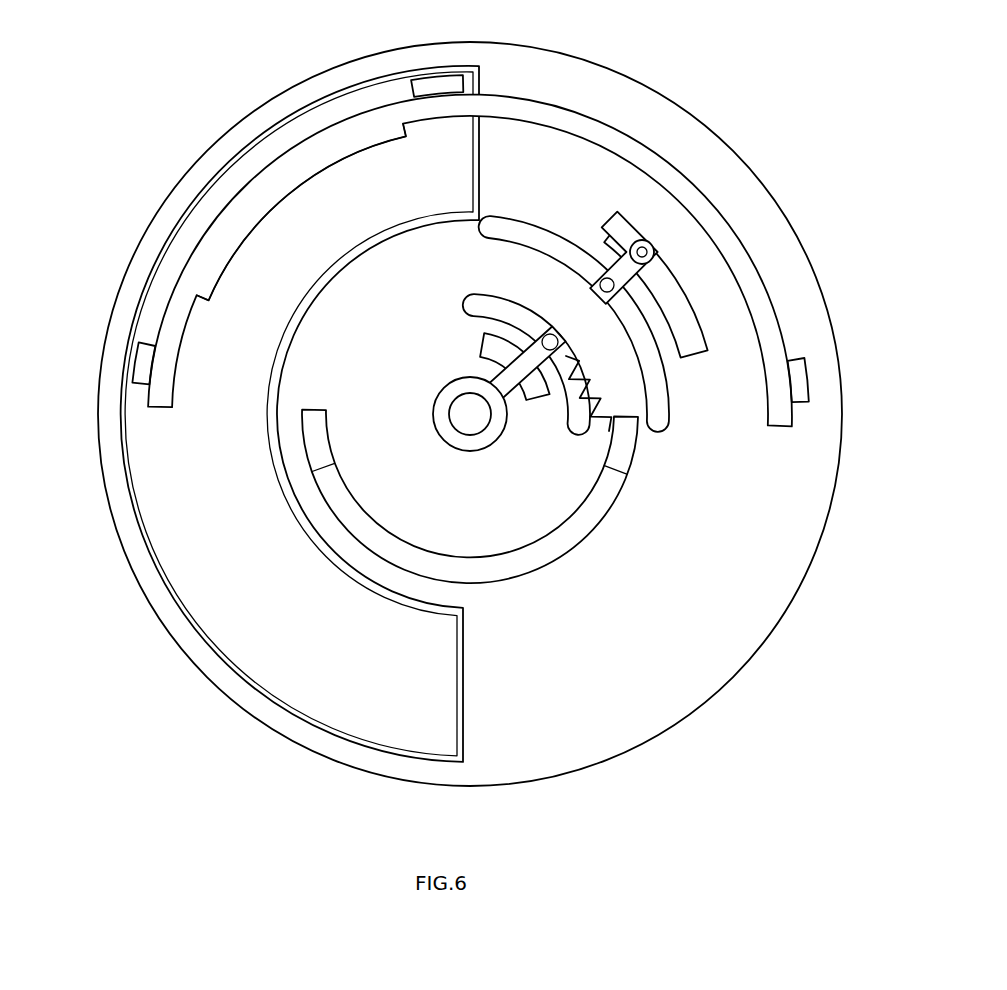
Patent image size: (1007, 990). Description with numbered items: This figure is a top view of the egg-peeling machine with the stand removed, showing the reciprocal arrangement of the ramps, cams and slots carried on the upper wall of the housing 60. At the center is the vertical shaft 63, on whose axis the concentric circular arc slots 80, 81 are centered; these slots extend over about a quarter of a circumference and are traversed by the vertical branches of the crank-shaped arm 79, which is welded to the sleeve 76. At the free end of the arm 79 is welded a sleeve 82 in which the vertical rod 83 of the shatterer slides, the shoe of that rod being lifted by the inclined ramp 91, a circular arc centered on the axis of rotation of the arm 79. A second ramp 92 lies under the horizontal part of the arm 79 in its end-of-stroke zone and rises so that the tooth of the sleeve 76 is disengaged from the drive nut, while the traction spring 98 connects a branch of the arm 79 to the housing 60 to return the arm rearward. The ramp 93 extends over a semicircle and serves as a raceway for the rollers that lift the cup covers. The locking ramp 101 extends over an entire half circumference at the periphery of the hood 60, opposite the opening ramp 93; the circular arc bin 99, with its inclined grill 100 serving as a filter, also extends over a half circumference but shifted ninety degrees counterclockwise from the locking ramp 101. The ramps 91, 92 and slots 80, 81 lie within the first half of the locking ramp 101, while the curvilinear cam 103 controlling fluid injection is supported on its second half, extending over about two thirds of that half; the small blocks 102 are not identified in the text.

The housing 60 is at (640, 660).
The shaft 63 is at (466, 420).
The sleeve 76 is at (466, 452).
The arm 79 is at (520, 392).
The circular arc slot 80 is at (487, 306).
The circular arc slot 81 is at (527, 237).
The sleeve 82 is at (650, 242).
The vertical rod 83 is at (653, 257).
The inclined ramp 91 is at (696, 345).
The ramp 92 is at (493, 347).
The ramp 93 is at (563, 543).
The traction spring 98 is at (597, 400).
The circular arc bin 99 is at (284, 712).
The inclined grill 100 is at (305, 620).
The locking ramp 101 is at (220, 233).
The blocks 102 is at (434, 85).
The curvilinear cam 103 is at (323, 170).